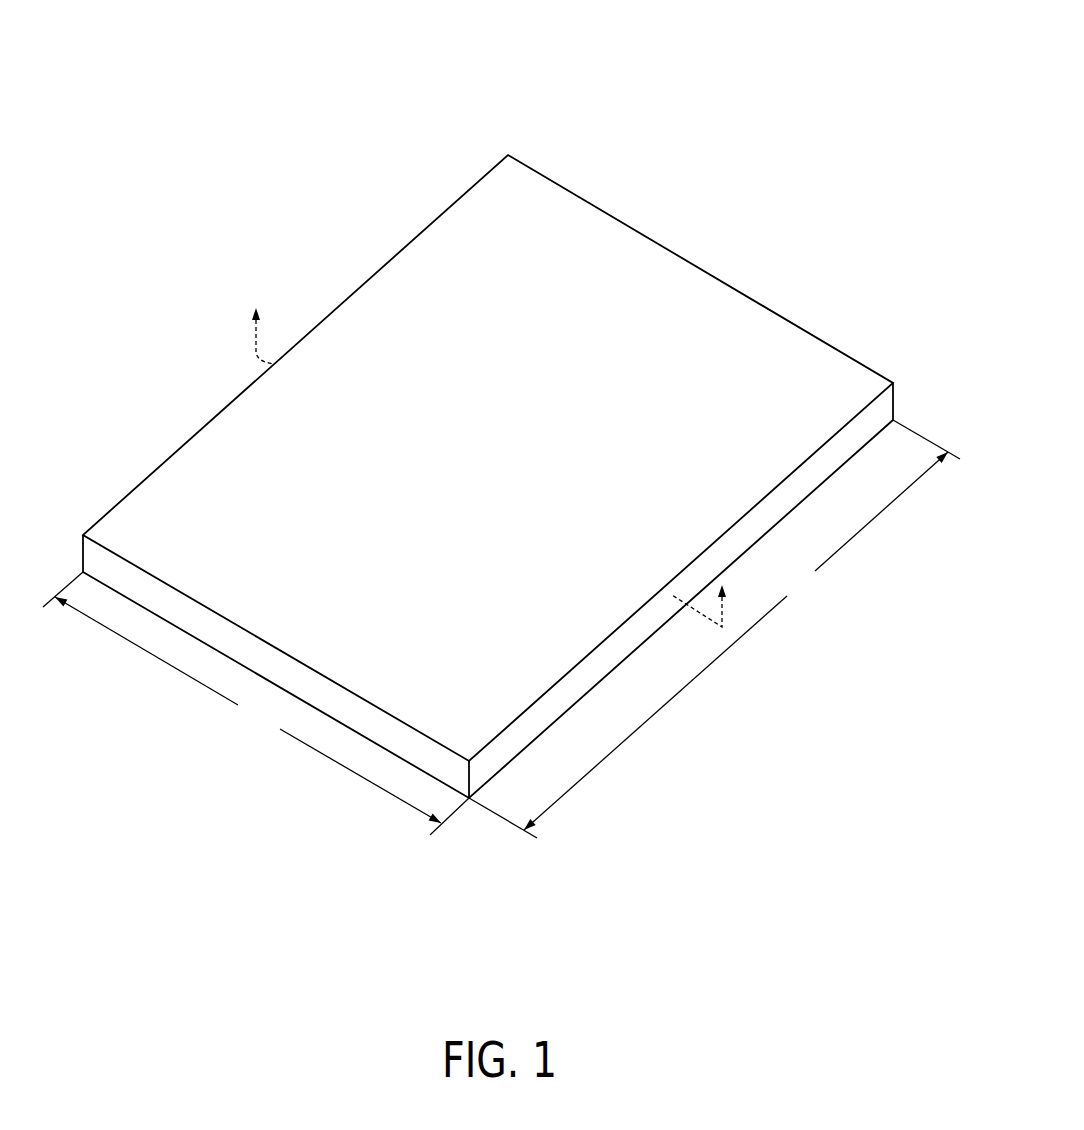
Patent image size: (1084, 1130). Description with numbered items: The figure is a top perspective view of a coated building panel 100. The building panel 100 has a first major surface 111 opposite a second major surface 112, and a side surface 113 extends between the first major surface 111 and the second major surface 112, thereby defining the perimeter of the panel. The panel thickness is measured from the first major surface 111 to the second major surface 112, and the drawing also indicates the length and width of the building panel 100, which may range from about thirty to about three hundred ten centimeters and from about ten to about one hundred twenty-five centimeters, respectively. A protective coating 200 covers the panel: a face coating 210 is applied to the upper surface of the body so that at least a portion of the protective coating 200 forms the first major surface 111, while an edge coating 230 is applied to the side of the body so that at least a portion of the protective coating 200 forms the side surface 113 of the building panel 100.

The coated building panel 100 is at (680, 168).
The first major surface 111 is at (371, 320).
The second major surface 112 is at (549, 728).
The side surface 113 is at (358, 716).
The protective coating 200 is at (488, 427).
The face coating 210 is at (555, 265).
The edge coating 230 is at (212, 633).